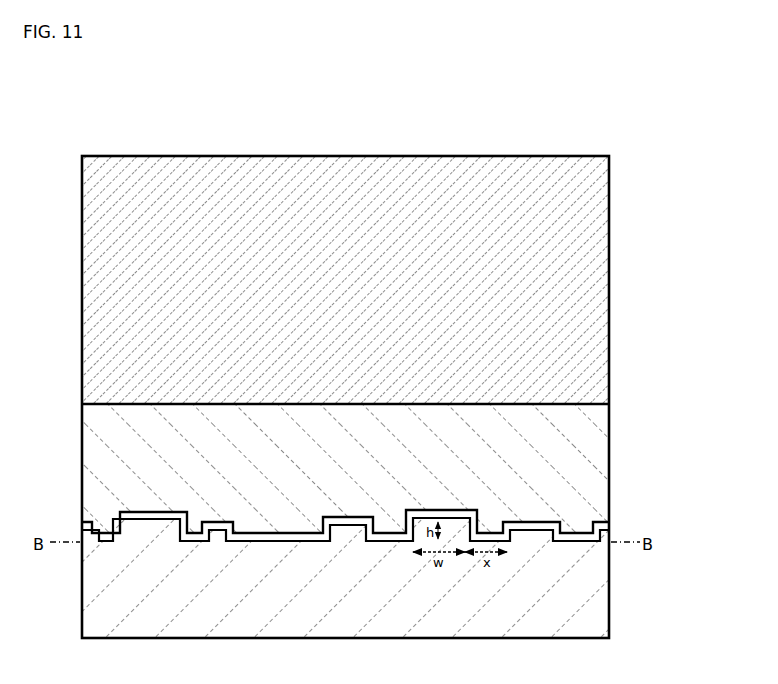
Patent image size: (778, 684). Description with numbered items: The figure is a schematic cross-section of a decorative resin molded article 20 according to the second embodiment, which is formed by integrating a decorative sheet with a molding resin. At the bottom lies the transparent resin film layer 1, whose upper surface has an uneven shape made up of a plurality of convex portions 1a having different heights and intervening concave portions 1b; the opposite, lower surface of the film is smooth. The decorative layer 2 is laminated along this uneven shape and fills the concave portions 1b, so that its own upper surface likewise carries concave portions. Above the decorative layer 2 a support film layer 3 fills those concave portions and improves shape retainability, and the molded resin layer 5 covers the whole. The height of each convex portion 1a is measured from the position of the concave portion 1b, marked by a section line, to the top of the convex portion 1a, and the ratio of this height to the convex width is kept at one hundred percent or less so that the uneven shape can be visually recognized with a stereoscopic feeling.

The decorative resin molded article 20 is at (574, 131).
The molded resin layer 5 is at (610, 276).
The support film layer 3 is at (611, 469).
The decorative layer 2 is at (610, 529).
The transparent resin film layer 1 is at (610, 596).
The convex portion 1a is at (97, 494).
The concave portion 1b is at (82, 525).